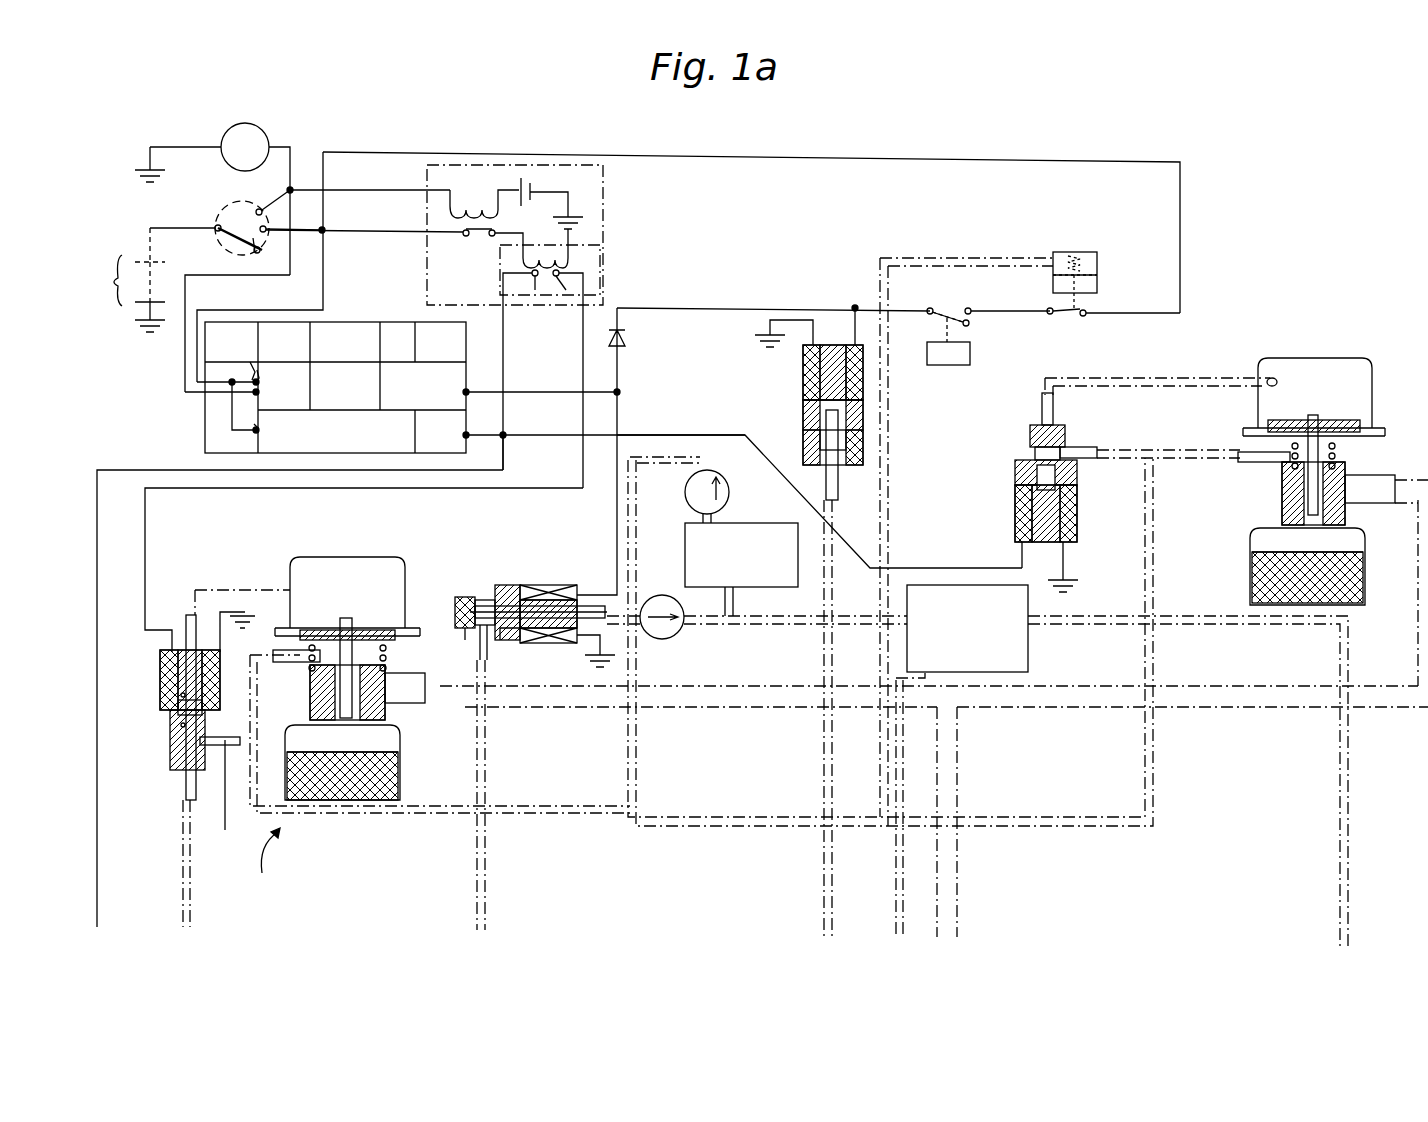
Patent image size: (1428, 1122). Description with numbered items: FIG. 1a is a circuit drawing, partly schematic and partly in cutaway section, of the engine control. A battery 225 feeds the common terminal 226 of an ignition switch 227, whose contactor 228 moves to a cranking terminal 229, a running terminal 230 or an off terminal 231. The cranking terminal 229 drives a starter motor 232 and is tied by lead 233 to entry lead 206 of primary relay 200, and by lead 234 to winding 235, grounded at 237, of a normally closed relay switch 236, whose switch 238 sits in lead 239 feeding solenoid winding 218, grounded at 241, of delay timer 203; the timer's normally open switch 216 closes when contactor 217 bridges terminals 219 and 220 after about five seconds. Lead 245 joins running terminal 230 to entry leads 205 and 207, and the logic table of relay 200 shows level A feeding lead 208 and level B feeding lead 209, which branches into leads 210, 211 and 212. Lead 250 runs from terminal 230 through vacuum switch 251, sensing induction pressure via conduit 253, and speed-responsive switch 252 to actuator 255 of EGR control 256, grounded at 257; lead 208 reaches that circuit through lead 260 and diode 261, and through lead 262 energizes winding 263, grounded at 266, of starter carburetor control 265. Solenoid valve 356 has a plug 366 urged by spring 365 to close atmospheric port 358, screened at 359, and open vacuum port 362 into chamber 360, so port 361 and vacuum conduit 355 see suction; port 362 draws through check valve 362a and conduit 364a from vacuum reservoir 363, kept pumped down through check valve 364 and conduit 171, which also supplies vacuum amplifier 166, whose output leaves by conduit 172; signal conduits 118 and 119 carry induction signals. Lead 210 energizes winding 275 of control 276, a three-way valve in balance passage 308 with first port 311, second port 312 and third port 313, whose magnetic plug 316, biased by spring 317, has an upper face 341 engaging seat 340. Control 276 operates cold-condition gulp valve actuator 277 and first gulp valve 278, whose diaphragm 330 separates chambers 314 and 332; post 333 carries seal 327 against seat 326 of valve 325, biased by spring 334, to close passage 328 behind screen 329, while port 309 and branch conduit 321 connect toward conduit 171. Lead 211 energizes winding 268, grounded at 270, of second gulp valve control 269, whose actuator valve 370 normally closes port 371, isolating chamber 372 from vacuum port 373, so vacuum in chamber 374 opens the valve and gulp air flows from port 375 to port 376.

The starter motor 232 is at (257, 135).
The ignition switch 227 is at (236, 203).
The cranking terminal 229 is at (260, 208).
The common terminal 226 is at (214, 225).
The contactor 228 is at (236, 250).
The running terminal 230 is at (268, 232).
The off terminal 231 is at (258, 252).
The battery 225 is at (132, 325).
The lead 233 is at (248, 278).
The lead 245 is at (318, 293).
The lead 250 is at (360, 152).
The lead 234 is at (343, 197).
The lead 239 is at (343, 236).
The normally closed relay switch 236 is at (492, 195).
The winding 235 is at (475, 198).
The ground 237 is at (533, 190).
The ground 241 is at (584, 220).
The switch 238 is at (480, 253).
The delay timer 203 is at (604, 247).
The solenoid winding 218 is at (548, 225).
The terminal 219 is at (508, 278).
The terminal 220 is at (560, 270).
The contactor 217 is at (533, 292).
The normally open off/on switch 216 is at (572, 300).
The primary relay 200 is at (200, 442).
The entry lead 205 is at (222, 359).
The entry lead 206 is at (228, 362).
The entry lead 207 is at (240, 416).
The lead 208 is at (490, 390).
The lead 211 is at (545, 428).
The lead 209 is at (505, 440).
The lead 212 is at (495, 474).
The lead 210 is at (504, 372).
The diode 261 is at (626, 338).
The lead 260 is at (627, 376).
The lead 262 is at (622, 432).
The conduit 253 is at (846, 306).
The ground 257 is at (751, 350).
The actuator 255 is at (800, 405).
The exhaust gas recirculation control 256 is at (815, 415).
The signal conduit 119 is at (822, 916).
The signal conduit 118 is at (893, 916).
The speed-responsive switch 252 is at (942, 308).
The vacuum switch 251 is at (1097, 248).
The unidirectional check valve 364 is at (730, 500).
The vacuum reservoir 363 is at (741, 569).
The conduit 364a is at (738, 610).
The unidirectional check valve 362a is at (676, 633).
The vacuum amplifier 166 is at (1127, 766).
The conduit 172 is at (1350, 912).
The conduit 171 is at (630, 790).
The seat 326 is at (690, 704).
The ground 266 is at (622, 674).
The solenoid winding 263 is at (524, 726).
The vacuum port 362 is at (572, 585).
The chamber 360 is at (508, 585).
The port 358 is at (470, 594).
The screen 359 is at (462, 603).
The solenoid valve 356 is at (490, 585).
The magnetic plug 366 is at (502, 642).
The bias spring 365 is at (550, 645).
The vacuum conduit 355 is at (487, 905).
The port 361 is at (450, 660).
The starter carburetor control 265 is at (540, 650).
The cold-condition gulp valve actuator 277 is at (323, 707).
The diaphragm 330 is at (370, 595).
The chamber 314 is at (345, 585).
The post 333 is at (350, 625).
The bias spring 334 is at (392, 645).
The port 309 is at (312, 678).
The seat 340 is at (238, 718).
The first gulp valve 278 is at (402, 728).
The passage 328 is at (400, 750).
The valve 325 is at (398, 760).
The branch conduit 321 is at (300, 810).
The seal 327 is at (345, 800).
The screen 329 is at (390, 800).
The second port 312 is at (226, 815).
The control 276 is at (198, 739).
The solenoid winding 275 is at (160, 662).
The third port 313 is at (190, 612).
The magnetic plug 316 is at (170, 740).
The bias spring 317 is at (178, 708).
The upper face 341 is at (180, 694).
The first port 311 is at (168, 780).
The chamber 332 is at (293, 600).
The balance passage 308 is at (190, 906).
The solenoid winding 268 is at (1104, 485).
The port 371 is at (1028, 428).
The vacuum port 373 is at (1072, 448).
The actuator valve 370 is at (1030, 483).
The ground 270 is at (1068, 580).
The second gulp valve control 269 is at (1310, 472).
The chamber 372 is at (1272, 362).
The chamber 374 is at (1348, 475).
The port 376 is at (1375, 505).
The port 375 is at (1252, 540).